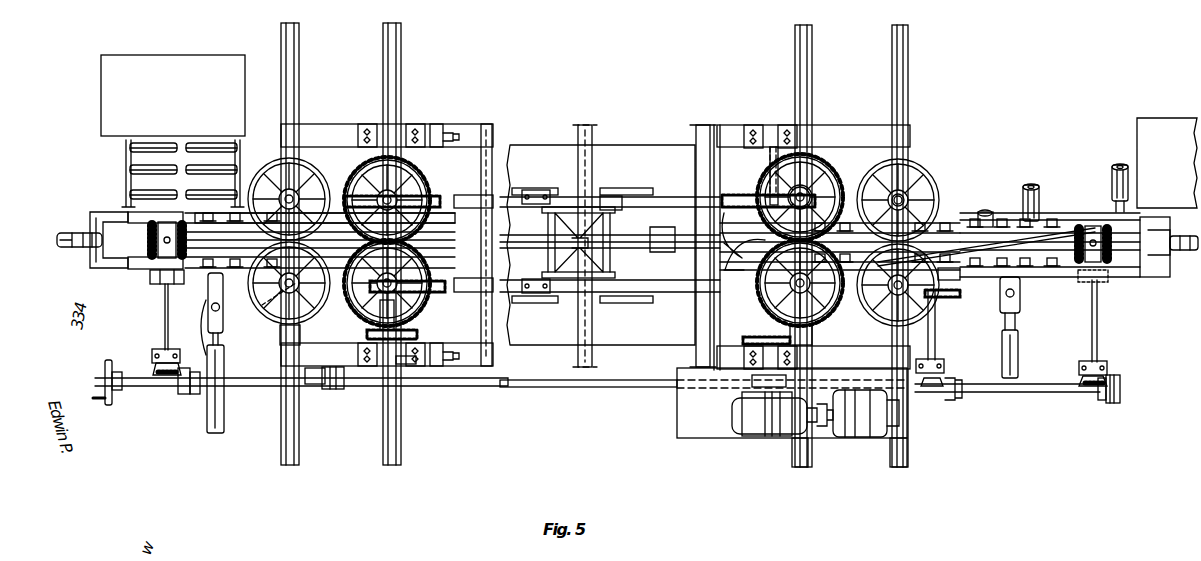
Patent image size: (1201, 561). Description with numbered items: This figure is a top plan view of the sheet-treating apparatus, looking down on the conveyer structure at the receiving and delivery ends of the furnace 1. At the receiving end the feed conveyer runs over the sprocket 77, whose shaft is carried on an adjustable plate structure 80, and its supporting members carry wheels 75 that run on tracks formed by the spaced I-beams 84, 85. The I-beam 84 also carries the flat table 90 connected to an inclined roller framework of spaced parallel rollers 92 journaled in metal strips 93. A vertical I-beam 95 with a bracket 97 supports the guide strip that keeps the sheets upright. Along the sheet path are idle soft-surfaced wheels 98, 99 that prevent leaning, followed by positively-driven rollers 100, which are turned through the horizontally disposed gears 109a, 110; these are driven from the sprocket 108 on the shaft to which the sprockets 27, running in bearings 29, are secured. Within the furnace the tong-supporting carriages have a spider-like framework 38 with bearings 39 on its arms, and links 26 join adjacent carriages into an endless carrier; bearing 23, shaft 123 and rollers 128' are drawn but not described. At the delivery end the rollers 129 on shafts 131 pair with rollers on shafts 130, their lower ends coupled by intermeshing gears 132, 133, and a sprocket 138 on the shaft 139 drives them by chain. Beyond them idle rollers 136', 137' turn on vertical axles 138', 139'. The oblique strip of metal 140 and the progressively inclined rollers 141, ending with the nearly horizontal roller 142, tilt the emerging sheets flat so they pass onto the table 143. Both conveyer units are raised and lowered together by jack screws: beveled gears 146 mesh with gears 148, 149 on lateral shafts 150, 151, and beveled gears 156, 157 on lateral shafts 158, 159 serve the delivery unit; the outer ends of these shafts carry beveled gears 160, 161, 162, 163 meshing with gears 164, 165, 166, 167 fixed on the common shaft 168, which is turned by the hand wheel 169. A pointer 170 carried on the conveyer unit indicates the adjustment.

The furnace 1 is at (610, 360).
The bearing 23 is at (540, 283).
The links 26 is at (645, 189).
The driving wheels or sprockets 27 is at (440, 292).
The bearings 29 is at (404, 365).
The spider-like framework 38 is at (616, 227).
The bearings 39 is at (612, 198).
The wheels or rollers 75 is at (208, 212).
The sprocket 77 is at (84, 236).
The plate structure 80 is at (95, 225).
The I-beam 84 is at (128, 214).
The I-beam 85 is at (137, 270).
The table 90 is at (190, 72).
The rollers 92 is at (151, 143).
The metal strips 93 is at (126, 157).
The vertical I-beam 95 is at (224, 351).
The bracket 97 is at (208, 300).
The idly rotatable wheels 98 is at (278, 170).
The idly rotatable wheels 99 is at (256, 281).
The positively-driven rollers 100 is at (365, 177).
The sprocket 108 is at (388, 345).
The horizontally disposed gear 109a is at (372, 308).
The horizontally disposed gear 110 is at (420, 192).
The output shaft 123 is at (1155, 250).
The lower gear 128' is at (811, 286).
The rollers 129 is at (815, 170).
The shafts 130 is at (783, 307).
The shafts 131 is at (768, 188).
The intermeshing gear 132 is at (822, 322).
The intermeshing gear 133 is at (813, 195).
The rollers 136' is at (898, 295).
The rollers 137' is at (904, 189).
The sprocket 138 is at (724, 332).
The vertical axle 138' is at (953, 301).
The shaft 139 is at (750, 176).
The vertical axle 139' is at (933, 179).
The strip of metal 140 is at (1093, 226).
The rollers 141 is at (1032, 187).
The final roller 142 is at (1118, 165).
The table 143 is at (1165, 145).
The beveled gear 146 is at (161, 225).
The beveled gear 148 is at (178, 280).
The beveled gear 149 is at (263, 299).
The horizontal shaft 150 is at (164, 315).
The horizontal shaft 151 is at (280, 329).
The beveled gear 156 is at (950, 280).
The beveled gear 157 is at (1078, 280).
The horizontal shaft 158 is at (945, 337).
The horizontal shaft 159 is at (1092, 330).
The beveled gear 160 is at (156, 366).
The beveled gear 161 is at (312, 386).
The beveled gear 162 is at (930, 378).
The beveled gear 163 is at (1088, 386).
The gear 164 is at (185, 390).
The gear 165 is at (326, 390).
The gear 166 is at (946, 398).
The gear 167 is at (1104, 400).
The shaft 168 is at (470, 387).
The hand wheel 169 is at (115, 392).
The pointer 170 is at (205, 345).